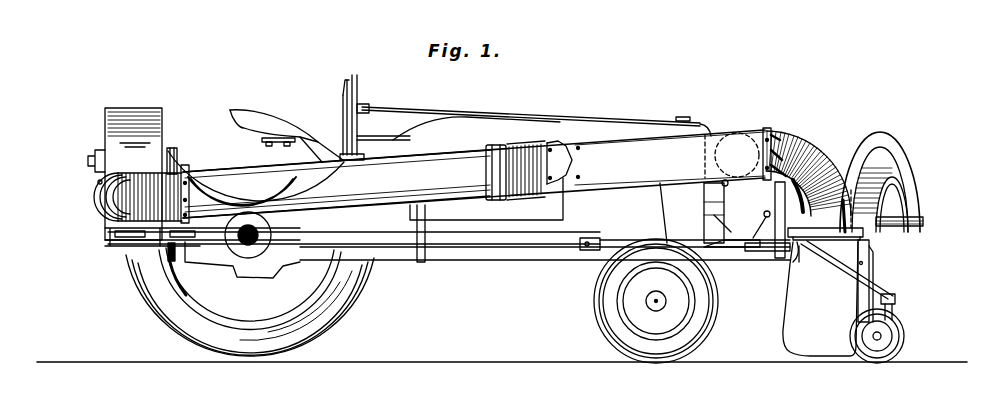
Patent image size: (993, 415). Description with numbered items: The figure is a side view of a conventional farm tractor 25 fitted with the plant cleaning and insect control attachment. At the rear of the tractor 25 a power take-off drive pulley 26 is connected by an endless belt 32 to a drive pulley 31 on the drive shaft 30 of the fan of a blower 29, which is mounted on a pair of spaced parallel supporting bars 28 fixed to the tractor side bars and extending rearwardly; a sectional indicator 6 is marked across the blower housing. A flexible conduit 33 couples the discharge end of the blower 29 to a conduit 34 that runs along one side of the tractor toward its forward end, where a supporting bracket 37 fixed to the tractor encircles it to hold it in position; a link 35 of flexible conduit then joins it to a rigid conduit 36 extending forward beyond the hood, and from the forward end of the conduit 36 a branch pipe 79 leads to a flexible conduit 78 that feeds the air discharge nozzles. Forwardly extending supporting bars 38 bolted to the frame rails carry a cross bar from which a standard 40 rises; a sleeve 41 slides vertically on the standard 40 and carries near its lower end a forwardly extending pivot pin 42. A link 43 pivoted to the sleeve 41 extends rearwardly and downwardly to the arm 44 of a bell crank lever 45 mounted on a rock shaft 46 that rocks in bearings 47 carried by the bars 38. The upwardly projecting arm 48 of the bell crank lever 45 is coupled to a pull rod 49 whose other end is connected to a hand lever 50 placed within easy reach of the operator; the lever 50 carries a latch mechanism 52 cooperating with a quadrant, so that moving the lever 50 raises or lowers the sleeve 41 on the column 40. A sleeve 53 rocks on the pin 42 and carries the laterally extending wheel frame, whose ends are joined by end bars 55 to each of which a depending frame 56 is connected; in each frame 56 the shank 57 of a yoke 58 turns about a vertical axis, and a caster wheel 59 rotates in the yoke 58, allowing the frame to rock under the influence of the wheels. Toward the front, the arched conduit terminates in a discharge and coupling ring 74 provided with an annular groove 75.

The section line 6- 6 is at (146, 86).
The farm tractor 25 is at (540, 122).
The drive pulley 26 is at (176, 276).
The supporting bars 28 is at (108, 246).
The blower 29 is at (150, 118).
The drive shaft 30 is at (92, 160).
The drive pulley 31 is at (178, 158).
The endless belt 32 is at (188, 208).
The flexible conduit 33 is at (120, 193).
The conduit 34 is at (403, 165).
The link of flexible conduit 35 is at (515, 145).
The rigid conduit 36 is at (648, 148).
The supporting bracket 37 is at (493, 150).
The supporting bars 38 is at (732, 253).
The standard 40 is at (766, 128).
The sleeve 41 is at (775, 197).
The pivot pin 42 is at (788, 252).
The link 43 is at (764, 214).
The arm 44 is at (750, 250).
The bell crank lever 45 is at (711, 225).
The rock shaft 46 is at (727, 237).
The bearings 47 is at (682, 250).
The arm 48 is at (718, 205).
The pull rod 49 is at (380, 133).
The hand lever 50 is at (343, 122).
The latch mechanism 52 is at (342, 88).
The sleeve 53 is at (800, 250).
The end bars 55 is at (838, 229).
The depending frame 56 is at (853, 272).
The shank 57 is at (891, 296).
The yoke 58 is at (899, 331).
The caster wheel 59 is at (904, 347).
The discharge and coupling ring 74 is at (920, 217).
The annular groove 75 is at (911, 227).
The flexible conduit 78 is at (812, 160).
The branch pipe 79 is at (712, 143).